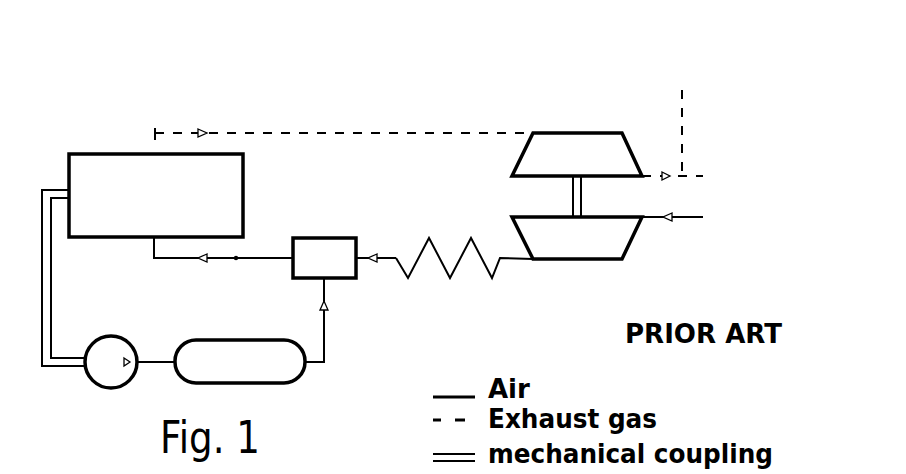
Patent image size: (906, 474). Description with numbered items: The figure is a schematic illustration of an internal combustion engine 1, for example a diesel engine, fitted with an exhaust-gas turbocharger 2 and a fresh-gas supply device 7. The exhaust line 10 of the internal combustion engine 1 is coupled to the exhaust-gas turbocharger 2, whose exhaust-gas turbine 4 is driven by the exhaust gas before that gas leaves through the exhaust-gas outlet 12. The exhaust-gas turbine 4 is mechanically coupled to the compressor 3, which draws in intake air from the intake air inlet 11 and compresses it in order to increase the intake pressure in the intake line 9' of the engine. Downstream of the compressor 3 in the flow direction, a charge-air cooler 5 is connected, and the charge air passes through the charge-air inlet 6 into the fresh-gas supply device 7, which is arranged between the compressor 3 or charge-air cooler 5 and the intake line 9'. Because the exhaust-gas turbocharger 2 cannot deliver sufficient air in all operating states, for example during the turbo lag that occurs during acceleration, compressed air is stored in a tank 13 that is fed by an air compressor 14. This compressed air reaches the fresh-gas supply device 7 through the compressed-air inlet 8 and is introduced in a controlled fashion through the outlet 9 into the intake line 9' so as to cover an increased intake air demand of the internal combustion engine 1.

The internal combustion engine 1 is at (149, 175).
The exhaust-gas turbocharger 2 is at (568, 172).
The compressor 3 is at (555, 238).
The exhaust-gas turbine 4 is at (560, 147).
The charge-air cooler 5 is at (482, 258).
The charge-air inlet 6 is at (360, 257).
The fresh-gas supply device 7 is at (335, 258).
The compressed-air inlet 8 is at (325, 353).
The outlet 9 is at (223, 276).
The intake line 9' is at (261, 219).
The exhaust line 10 is at (368, 133).
The intake air inlet 11 is at (682, 218).
The exhaust-gas outlet 12 is at (672, 121).
The tank 13 is at (254, 362).
The air compressor 14 is at (102, 365).